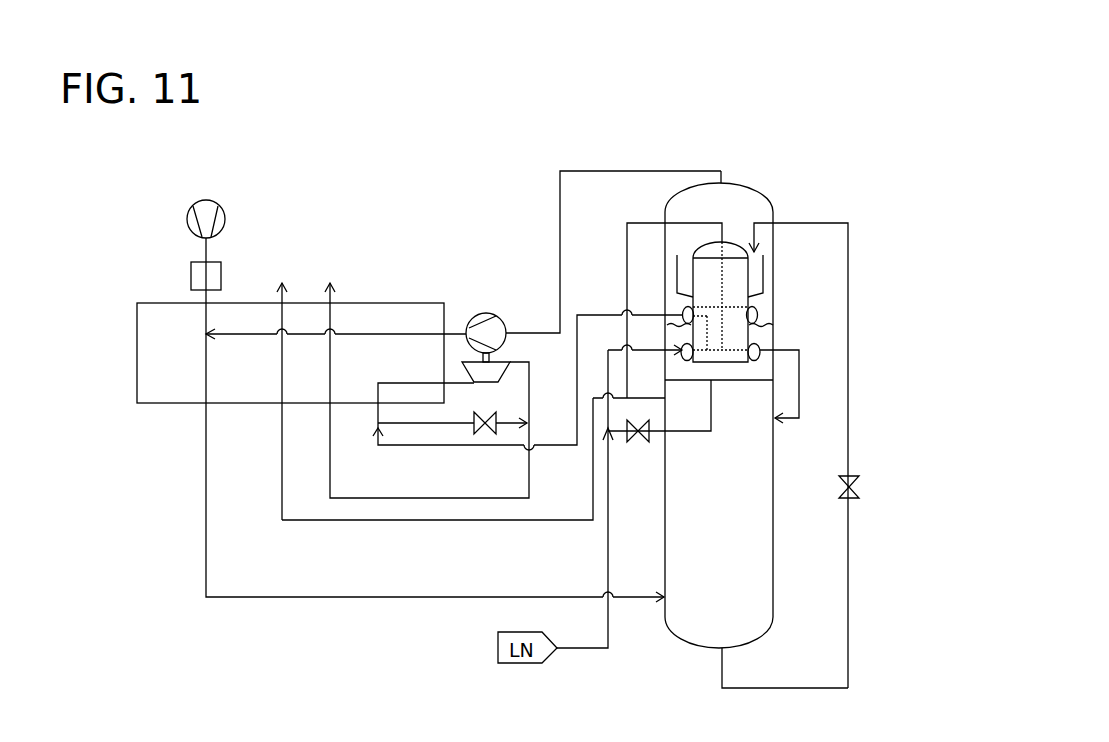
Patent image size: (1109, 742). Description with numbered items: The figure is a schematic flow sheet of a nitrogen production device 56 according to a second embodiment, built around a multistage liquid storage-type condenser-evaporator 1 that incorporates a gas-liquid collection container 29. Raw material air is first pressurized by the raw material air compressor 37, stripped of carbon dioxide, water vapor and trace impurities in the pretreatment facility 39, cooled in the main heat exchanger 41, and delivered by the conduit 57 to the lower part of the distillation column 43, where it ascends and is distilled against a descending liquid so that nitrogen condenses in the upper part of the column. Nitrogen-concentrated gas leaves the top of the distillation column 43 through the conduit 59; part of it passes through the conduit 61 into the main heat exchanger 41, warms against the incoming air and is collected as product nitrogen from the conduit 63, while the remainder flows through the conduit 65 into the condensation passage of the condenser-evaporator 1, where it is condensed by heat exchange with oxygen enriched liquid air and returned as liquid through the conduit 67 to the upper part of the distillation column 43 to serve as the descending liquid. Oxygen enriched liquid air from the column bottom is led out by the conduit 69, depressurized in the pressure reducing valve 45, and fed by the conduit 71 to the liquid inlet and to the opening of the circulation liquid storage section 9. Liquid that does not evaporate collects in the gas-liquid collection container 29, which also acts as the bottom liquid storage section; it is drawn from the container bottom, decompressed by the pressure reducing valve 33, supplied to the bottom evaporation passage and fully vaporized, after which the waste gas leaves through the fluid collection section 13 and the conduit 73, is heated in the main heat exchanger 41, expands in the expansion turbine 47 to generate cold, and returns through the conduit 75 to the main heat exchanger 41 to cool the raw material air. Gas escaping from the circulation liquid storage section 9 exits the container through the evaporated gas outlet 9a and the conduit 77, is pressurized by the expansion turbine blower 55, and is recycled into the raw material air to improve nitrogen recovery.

The multistage liquid storage-type condenser-evaporator 1 is at (750, 318).
The circulation liquid storage section 9 is at (768, 266).
The evaporated gas outlet 9a is at (723, 186).
The fluid collection section 13 is at (683, 310).
The gas-liquid collection container 29 is at (675, 197).
The pressure reducing valve 33 is at (640, 440).
The raw material air compressor 37 is at (188, 215).
The pretreatment facility 39 is at (191, 272).
The main heat exchanger 41 is at (137, 350).
The distillation column 43 is at (775, 548).
The pressure reducing valve 45 is at (858, 488).
The expansion turbine 47 is at (483, 378).
The expansion turbine blower 55 is at (486, 313).
The nitrogen production device 56 is at (835, 185).
The conduit 57 is at (294, 600).
The conduit 59 is at (655, 400).
The conduit 61 is at (353, 522).
The conduit 63 is at (280, 298).
The conduit 65 is at (627, 240).
The conduit 67 is at (800, 372).
The conduit 69 is at (849, 643).
The conduit 71 is at (849, 302).
The conduit 73 is at (578, 313).
The conduit 75 is at (400, 498).
The conduit 77 is at (600, 171).